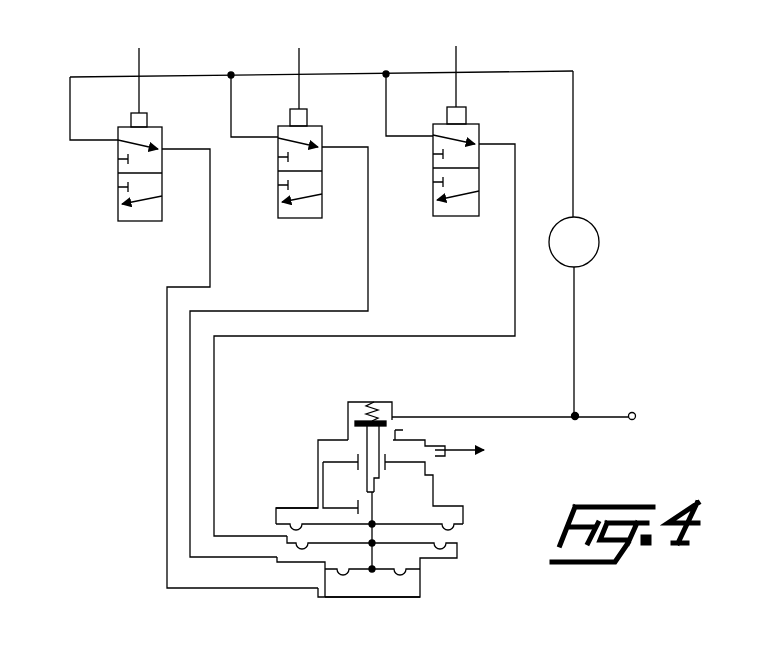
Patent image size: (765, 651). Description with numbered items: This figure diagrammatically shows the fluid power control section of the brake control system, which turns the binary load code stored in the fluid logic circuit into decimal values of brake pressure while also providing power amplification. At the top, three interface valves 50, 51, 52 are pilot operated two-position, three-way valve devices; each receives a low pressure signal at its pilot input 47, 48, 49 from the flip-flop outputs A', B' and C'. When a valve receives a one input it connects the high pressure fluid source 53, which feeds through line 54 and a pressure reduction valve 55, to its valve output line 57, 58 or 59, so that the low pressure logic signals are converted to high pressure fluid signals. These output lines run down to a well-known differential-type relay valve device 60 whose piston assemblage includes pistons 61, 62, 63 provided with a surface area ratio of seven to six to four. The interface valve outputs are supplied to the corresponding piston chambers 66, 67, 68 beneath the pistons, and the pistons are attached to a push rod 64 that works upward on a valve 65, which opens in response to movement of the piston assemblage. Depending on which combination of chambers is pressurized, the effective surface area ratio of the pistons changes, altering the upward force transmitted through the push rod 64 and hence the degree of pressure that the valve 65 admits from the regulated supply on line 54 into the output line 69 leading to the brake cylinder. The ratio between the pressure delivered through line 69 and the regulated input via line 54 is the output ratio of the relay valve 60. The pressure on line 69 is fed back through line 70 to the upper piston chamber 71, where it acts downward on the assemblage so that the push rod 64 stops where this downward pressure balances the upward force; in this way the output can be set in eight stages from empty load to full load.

The input lead A' 47 is at (140, 64).
The input lead B' 48 is at (300, 63).
The input lead C' 49 is at (457, 60).
The interface valve 50 is at (162, 129).
The interface valve 51 is at (322, 128).
The interface valve 52 is at (479, 126).
The high pressure fluid source 53 is at (634, 412).
The line 54 is at (599, 416).
The pressure reduction valve 55 is at (596, 230).
The valve output line 57 is at (210, 263).
The valve output line 58 is at (368, 261).
The valve output line 59 is at (515, 258).
The differential-type relay valve device 60 is at (337, 413).
The piston 61 is at (456, 523).
The piston 62 is at (452, 546).
The piston 63 is at (408, 572).
The push rod 64 is at (367, 498).
The valve 65 is at (392, 412).
The piston chamber 66 is at (353, 582).
The piston chamber 67 is at (330, 556).
The piston chamber 68 is at (305, 535).
The line 69 is at (461, 450).
The line 70 is at (330, 452).
The upper piston chamber 71 is at (300, 512).